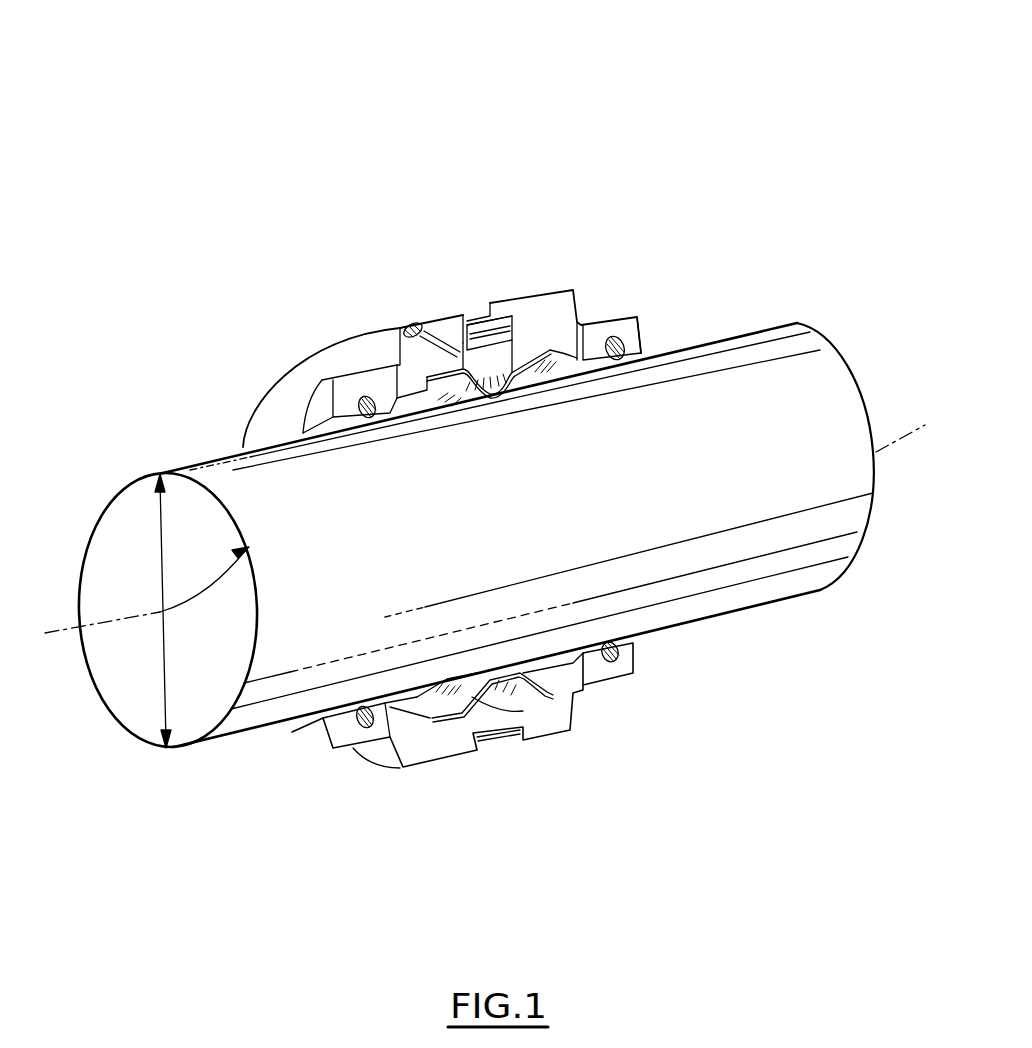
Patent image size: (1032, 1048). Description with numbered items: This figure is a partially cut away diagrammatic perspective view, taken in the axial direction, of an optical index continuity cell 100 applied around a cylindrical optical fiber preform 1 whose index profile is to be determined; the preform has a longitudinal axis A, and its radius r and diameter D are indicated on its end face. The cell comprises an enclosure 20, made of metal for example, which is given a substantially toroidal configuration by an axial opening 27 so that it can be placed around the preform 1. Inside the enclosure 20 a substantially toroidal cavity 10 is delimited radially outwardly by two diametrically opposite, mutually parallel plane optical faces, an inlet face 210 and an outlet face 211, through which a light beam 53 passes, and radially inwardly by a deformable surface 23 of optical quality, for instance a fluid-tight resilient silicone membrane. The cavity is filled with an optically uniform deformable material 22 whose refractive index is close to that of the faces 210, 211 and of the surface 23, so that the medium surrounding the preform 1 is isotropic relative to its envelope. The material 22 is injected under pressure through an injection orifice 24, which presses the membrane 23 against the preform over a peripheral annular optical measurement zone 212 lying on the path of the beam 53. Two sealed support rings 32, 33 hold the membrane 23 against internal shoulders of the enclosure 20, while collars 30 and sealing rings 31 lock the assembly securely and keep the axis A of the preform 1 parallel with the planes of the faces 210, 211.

The cylindrical optical fiber preform 1 is at (777, 324).
The toroidal cavity 10 is at (560, 732).
The enclosure 20 is at (566, 284).
The deformable material 22 is at (485, 352).
The deformable surface 23 is at (552, 699).
The injection orifice 24 is at (410, 322).
The axial opening 27 is at (307, 430).
The collars 30 is at (640, 318).
The sealing rings 31 is at (637, 345).
The sealed support ring 32 is at (390, 413).
The sealed support ring 33 is at (573, 350).
The light beam 53 is at (485, 295).
The index continuity cell 100 is at (292, 196).
The inlet face 210 is at (497, 308).
The outlet face 211 is at (500, 743).
The optical measurement zone 212 is at (500, 397).
The longitudinal axis A is at (480, 531).
The pipe radius r is at (204, 576).
The pipe diameter D is at (163, 680).